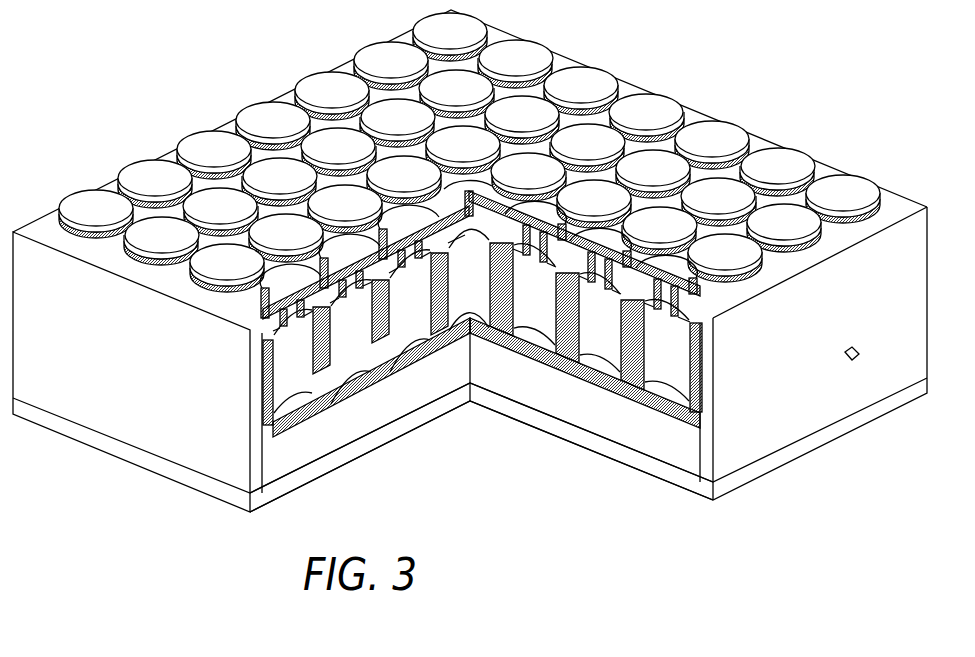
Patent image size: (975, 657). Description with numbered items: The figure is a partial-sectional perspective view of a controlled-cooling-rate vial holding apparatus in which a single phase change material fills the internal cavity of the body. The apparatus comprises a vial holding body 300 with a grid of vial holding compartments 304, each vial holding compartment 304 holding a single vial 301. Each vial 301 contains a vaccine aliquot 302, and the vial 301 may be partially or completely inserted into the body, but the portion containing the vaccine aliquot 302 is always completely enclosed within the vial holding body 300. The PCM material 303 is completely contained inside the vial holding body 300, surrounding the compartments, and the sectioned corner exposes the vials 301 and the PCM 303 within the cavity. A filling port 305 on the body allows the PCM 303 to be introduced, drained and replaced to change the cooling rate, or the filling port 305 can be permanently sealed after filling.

The vial holding body 300 is at (148, 418).
The vial 301 is at (707, 133).
The vaccine aliquot 302 is at (400, 370).
The PCM material 303 is at (573, 397).
The vial holding compartment 304 is at (787, 287).
The filling port 305 is at (853, 361).